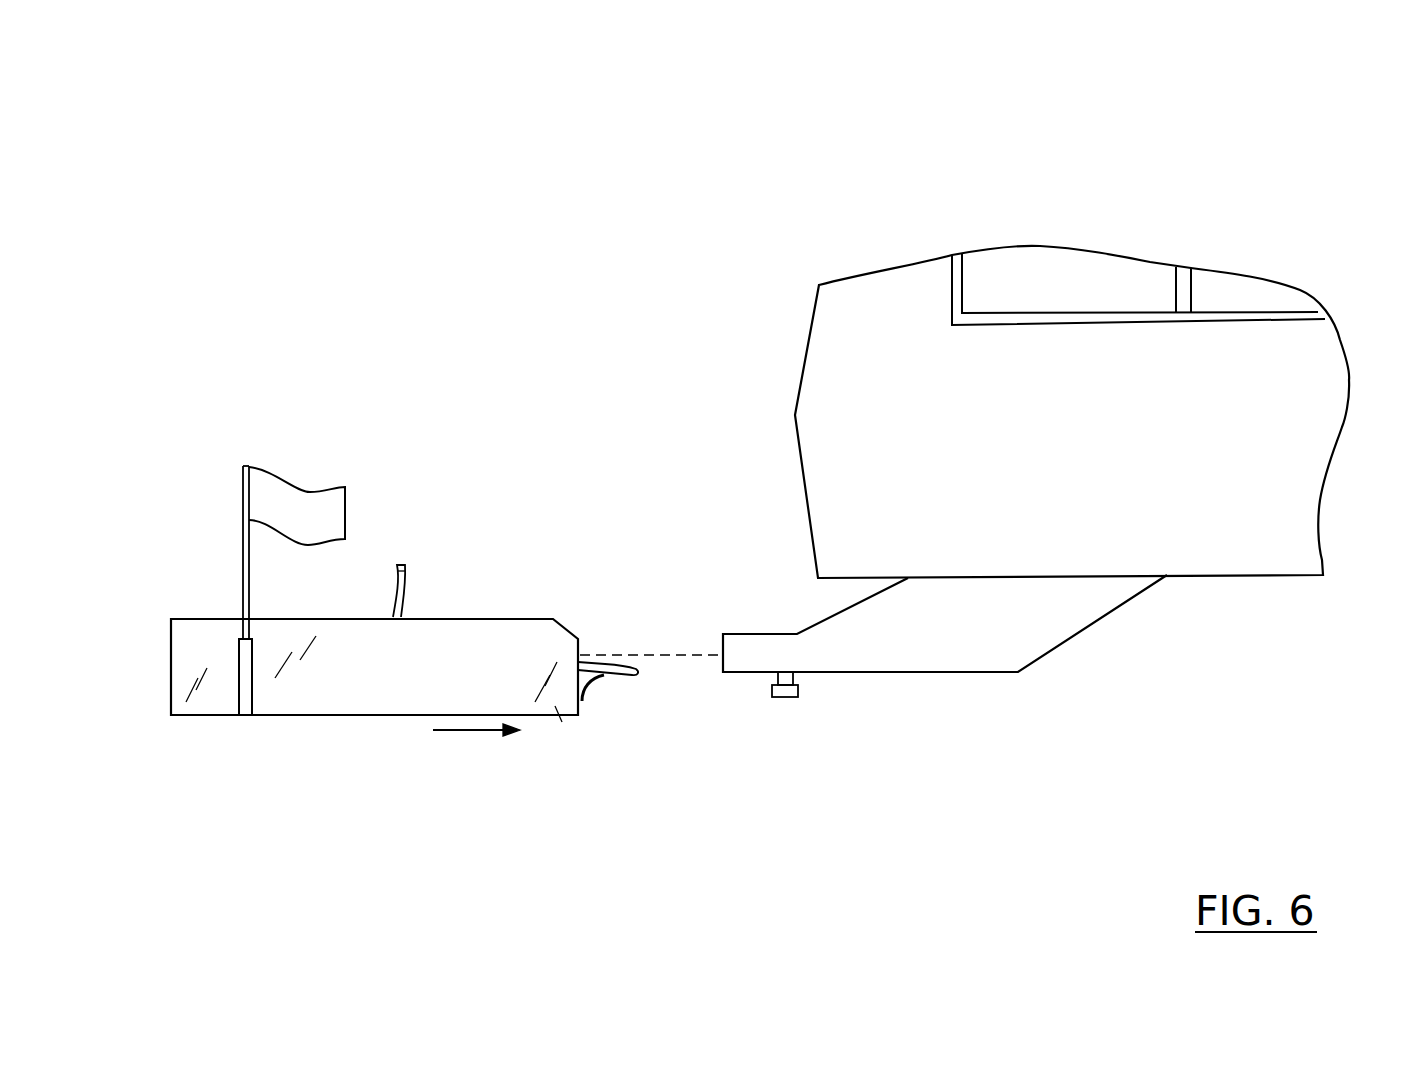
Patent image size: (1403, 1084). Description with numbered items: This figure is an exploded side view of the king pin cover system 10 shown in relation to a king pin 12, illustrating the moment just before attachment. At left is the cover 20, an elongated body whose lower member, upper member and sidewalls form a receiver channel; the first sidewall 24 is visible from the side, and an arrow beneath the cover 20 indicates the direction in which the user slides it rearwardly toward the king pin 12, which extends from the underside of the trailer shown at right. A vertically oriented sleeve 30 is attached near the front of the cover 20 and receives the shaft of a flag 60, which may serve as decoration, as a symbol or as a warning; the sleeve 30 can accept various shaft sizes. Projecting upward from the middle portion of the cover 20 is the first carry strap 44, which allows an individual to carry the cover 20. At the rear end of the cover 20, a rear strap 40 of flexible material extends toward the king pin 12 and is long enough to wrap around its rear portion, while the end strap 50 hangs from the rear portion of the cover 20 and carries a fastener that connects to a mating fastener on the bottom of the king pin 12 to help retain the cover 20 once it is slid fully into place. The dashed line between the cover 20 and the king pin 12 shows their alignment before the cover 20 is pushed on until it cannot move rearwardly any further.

The king pin cover system 10 is at (1262, 157).
The king pin 12 is at (897, 658).
The cover 20 is at (379, 726).
The first sidewall 24 is at (560, 712).
The sleeve 30 is at (245, 715).
The rear strap 40 is at (637, 674).
The first carry strap 44 is at (403, 587).
The end strap 50 is at (591, 688).
The flag 60 is at (335, 510).